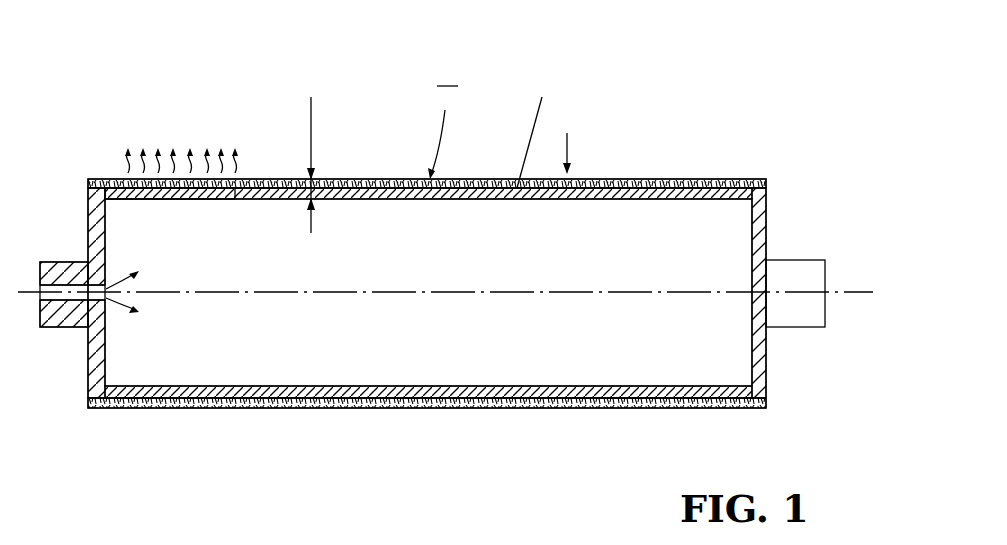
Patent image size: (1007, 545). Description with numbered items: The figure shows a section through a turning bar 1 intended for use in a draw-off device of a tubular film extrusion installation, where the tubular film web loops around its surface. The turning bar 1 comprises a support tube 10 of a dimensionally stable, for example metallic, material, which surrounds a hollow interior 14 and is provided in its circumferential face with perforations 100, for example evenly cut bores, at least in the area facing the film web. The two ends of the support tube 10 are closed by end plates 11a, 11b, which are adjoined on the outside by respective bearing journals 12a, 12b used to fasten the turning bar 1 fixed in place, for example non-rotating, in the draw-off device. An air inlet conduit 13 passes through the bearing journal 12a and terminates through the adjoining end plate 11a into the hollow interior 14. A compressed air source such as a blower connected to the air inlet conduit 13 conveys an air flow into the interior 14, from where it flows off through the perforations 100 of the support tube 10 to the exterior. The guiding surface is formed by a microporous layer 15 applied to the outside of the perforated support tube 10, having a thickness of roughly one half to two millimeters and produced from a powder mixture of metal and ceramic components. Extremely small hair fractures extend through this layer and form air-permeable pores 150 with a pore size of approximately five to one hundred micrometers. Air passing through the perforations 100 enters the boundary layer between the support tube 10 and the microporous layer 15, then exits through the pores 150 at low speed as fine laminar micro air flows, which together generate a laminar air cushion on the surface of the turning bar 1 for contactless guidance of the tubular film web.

The turning bar 1 is at (445, 220).
The support tube 10 is at (439, 260).
The end plate 11a is at (90, 210).
The end plate 11b is at (763, 208).
The bearing journal 12a is at (60, 248).
The bearing journal 12b is at (800, 265).
The air inlet conduit 13 is at (60, 297).
The hollow interior 14 is at (440, 273).
The microporous layer 15 is at (352, 186).
The perforations 100 is at (233, 197).
The pores 150 is at (241, 188).